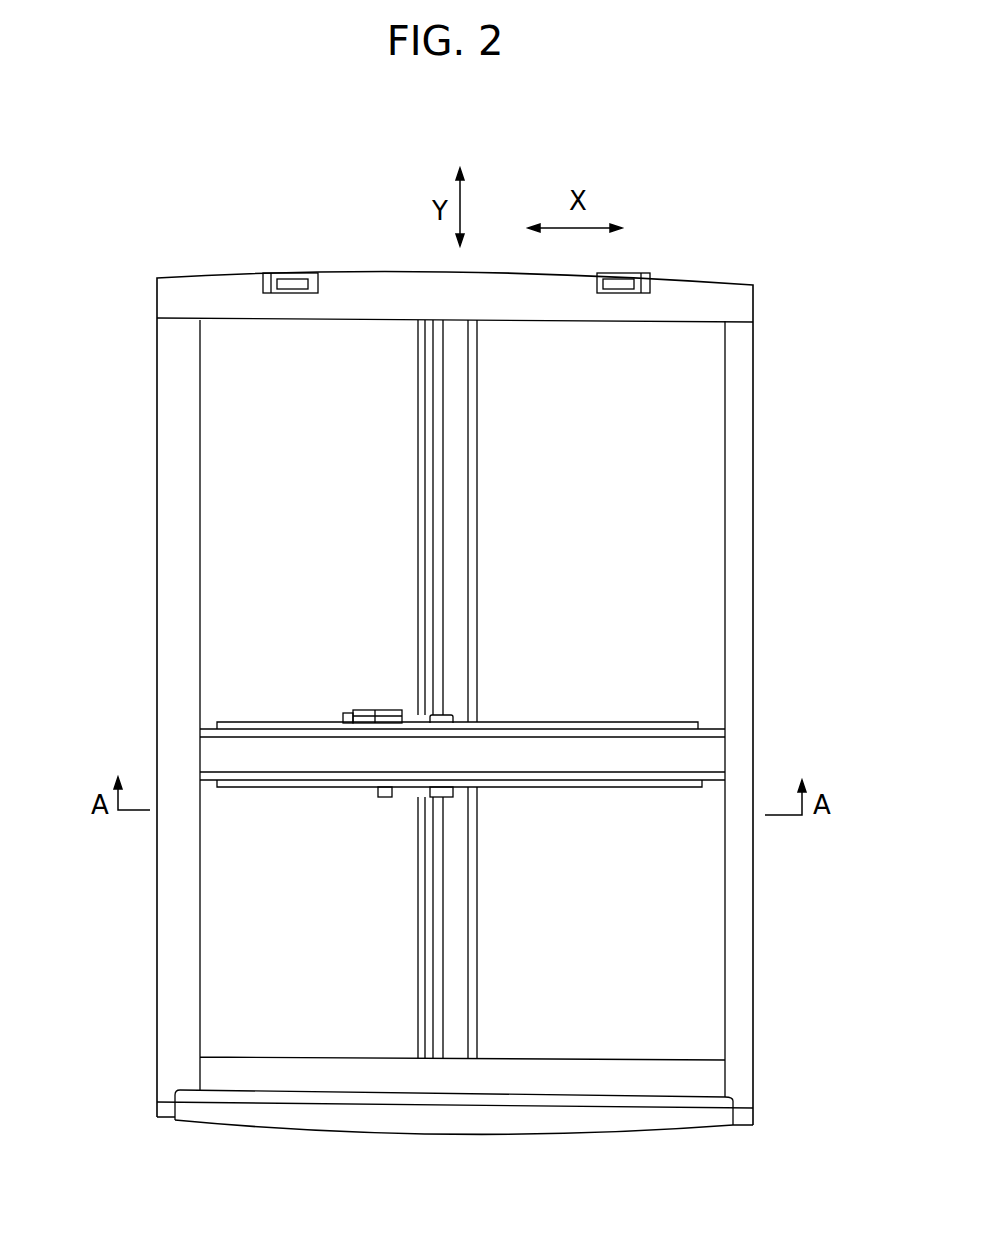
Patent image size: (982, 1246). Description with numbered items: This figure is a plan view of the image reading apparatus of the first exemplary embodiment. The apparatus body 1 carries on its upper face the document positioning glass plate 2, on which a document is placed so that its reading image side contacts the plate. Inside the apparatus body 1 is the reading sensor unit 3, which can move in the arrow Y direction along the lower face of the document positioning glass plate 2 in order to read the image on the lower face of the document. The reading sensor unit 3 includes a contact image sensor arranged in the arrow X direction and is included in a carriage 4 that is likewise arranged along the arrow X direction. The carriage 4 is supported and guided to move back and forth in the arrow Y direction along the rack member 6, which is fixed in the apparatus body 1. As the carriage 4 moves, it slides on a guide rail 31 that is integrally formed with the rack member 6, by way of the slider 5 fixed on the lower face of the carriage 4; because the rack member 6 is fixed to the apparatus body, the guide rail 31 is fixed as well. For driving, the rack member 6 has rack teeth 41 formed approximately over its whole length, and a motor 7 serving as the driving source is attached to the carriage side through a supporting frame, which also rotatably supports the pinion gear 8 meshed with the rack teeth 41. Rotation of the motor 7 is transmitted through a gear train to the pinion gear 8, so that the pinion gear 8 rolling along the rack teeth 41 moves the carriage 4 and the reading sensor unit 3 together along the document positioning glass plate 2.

The apparatus body 1 is at (718, 291).
The document positioning glass plate 2 is at (698, 458).
The reading sensor unit 3 is at (640, 753).
The guide rail 31 is at (437, 450).
The carriage 4 is at (553, 725).
The rack teeth 41 is at (422, 1010).
The slider 5 is at (433, 800).
The rack member 6 is at (430, 532).
The motor 7 is at (345, 718).
The pinion gear 8 is at (397, 718).